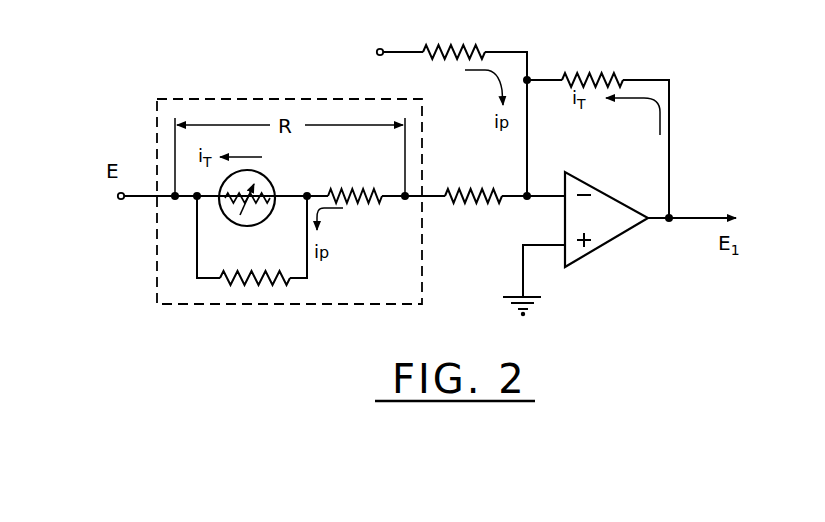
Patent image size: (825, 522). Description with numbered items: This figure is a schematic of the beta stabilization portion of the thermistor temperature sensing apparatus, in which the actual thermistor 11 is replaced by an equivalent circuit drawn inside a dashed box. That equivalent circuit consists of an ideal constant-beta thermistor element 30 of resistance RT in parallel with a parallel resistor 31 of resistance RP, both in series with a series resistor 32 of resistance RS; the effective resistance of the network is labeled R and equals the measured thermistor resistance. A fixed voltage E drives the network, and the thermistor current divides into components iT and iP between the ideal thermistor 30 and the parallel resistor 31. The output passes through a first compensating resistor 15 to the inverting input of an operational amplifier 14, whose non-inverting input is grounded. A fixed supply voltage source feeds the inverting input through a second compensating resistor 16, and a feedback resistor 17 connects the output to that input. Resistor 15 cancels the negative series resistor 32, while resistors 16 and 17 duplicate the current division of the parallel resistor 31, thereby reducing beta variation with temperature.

The thermistor 11 is at (205, 99).
The operational amplifier 14 is at (612, 242).
The first compensating resistor 15 is at (462, 201).
The second compensating resistor 16 is at (488, 46).
The feedback resistor 17 is at (600, 72).
The ideal constant-beta thermistor element 30 is at (256, 225).
The parallel resistor 31 is at (283, 284).
The series resistor 32 is at (370, 203).